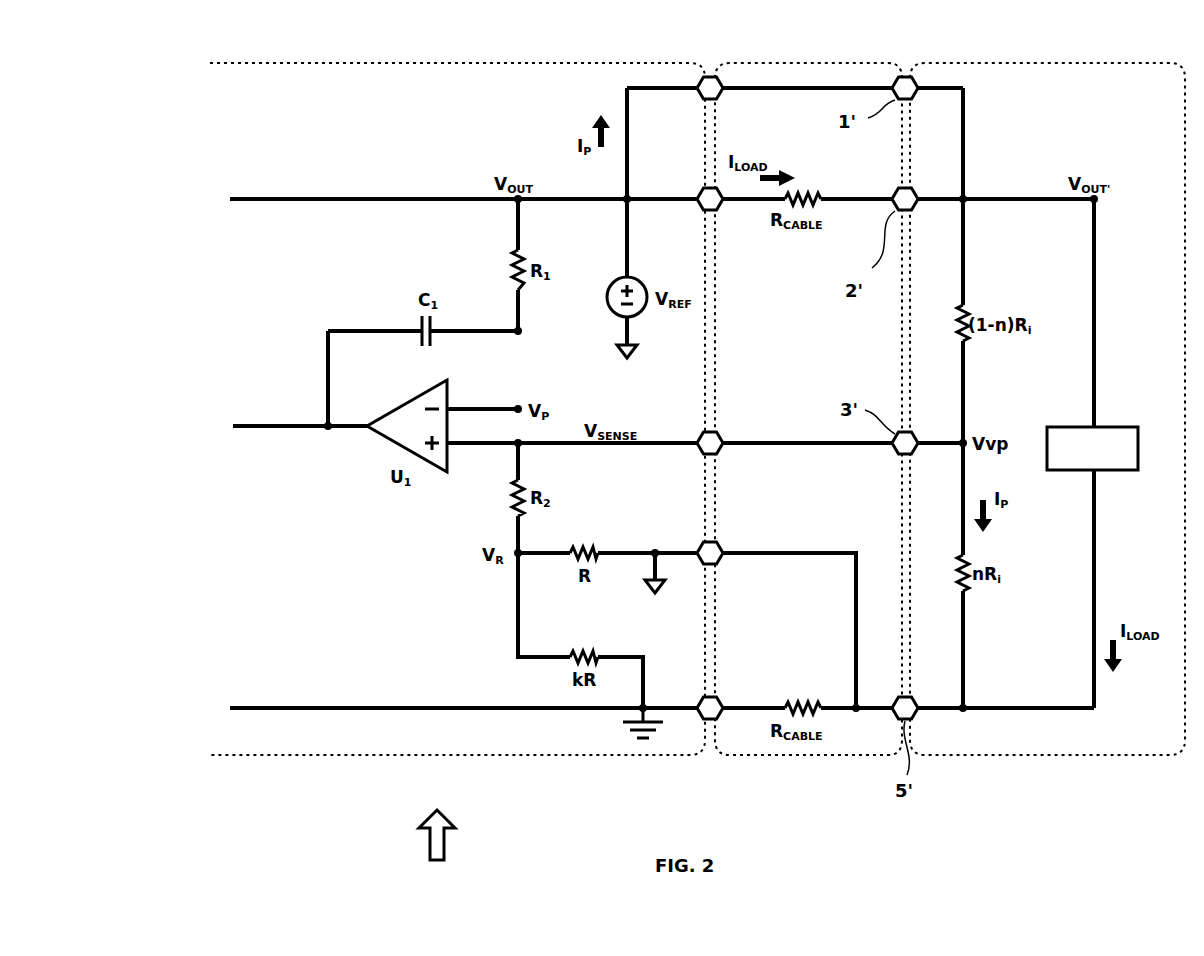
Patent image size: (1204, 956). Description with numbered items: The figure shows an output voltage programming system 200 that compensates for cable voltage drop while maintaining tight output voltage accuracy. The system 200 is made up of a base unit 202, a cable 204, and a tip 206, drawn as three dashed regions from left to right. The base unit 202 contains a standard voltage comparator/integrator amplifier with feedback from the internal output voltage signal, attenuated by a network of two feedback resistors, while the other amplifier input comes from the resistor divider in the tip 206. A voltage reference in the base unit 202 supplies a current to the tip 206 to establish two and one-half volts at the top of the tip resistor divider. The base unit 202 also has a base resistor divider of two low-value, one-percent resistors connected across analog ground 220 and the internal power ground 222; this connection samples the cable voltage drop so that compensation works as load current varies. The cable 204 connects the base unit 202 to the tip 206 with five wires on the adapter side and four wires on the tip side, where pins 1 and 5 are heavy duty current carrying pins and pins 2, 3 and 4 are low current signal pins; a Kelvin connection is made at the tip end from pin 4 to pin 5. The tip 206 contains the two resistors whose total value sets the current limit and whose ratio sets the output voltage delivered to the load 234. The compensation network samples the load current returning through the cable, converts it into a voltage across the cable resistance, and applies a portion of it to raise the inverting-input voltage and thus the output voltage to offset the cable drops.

The output voltage programming system 200 is at (453, 835).
The base unit 202 is at (455, 63).
The cable 204 is at (800, 63).
The tip 206 is at (1038, 63).
The analog ground 220 is at (633, 360).
The internal power ground 222 is at (620, 729).
The load 234 is at (1128, 427).
The pin 1 is at (720, 100).
The pin 2 is at (720, 211).
The pin 3 is at (720, 434).
The pin 4 is at (720, 544).
The pin 5 is at (710, 721).